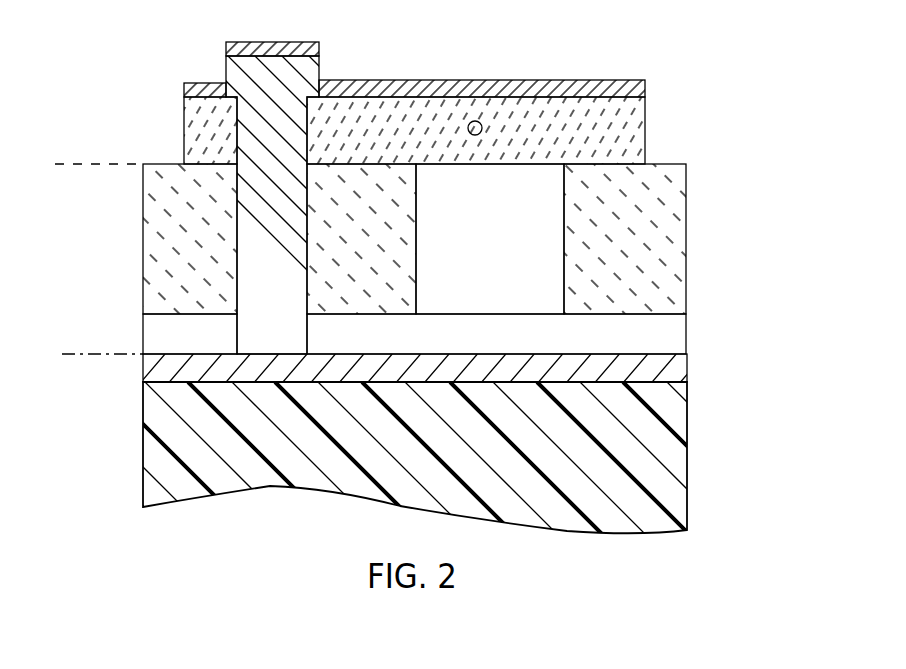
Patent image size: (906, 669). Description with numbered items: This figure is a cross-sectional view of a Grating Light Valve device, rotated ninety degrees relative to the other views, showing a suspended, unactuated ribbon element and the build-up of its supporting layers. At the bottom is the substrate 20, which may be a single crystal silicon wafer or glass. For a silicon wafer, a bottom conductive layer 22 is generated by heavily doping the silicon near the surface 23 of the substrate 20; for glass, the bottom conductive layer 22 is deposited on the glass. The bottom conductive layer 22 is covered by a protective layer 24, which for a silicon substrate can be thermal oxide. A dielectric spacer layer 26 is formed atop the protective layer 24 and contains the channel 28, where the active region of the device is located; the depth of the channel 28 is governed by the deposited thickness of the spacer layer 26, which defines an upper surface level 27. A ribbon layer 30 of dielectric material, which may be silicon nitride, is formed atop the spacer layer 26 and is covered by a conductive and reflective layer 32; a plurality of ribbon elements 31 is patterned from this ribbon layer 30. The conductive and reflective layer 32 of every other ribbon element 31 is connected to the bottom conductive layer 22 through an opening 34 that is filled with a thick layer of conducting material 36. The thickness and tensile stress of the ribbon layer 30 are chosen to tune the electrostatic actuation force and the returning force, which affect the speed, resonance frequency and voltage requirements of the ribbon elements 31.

The substrate 20 is at (680, 455).
The bottom conductive layer 22 is at (685, 367).
The surface of the substrate 23 is at (73, 354).
The protective layer 24 is at (683, 328).
The dielectric spacer layer 26 is at (683, 203).
The upper surface level 27 is at (92, 163).
The channel 28 is at (508, 238).
The ribbon layer 30 is at (640, 128).
The ribbon element 31 is at (473, 121).
The conductive and reflective layer 32 is at (608, 82).
The opening 34 is at (237, 148).
The conducting material 36 is at (233, 72).